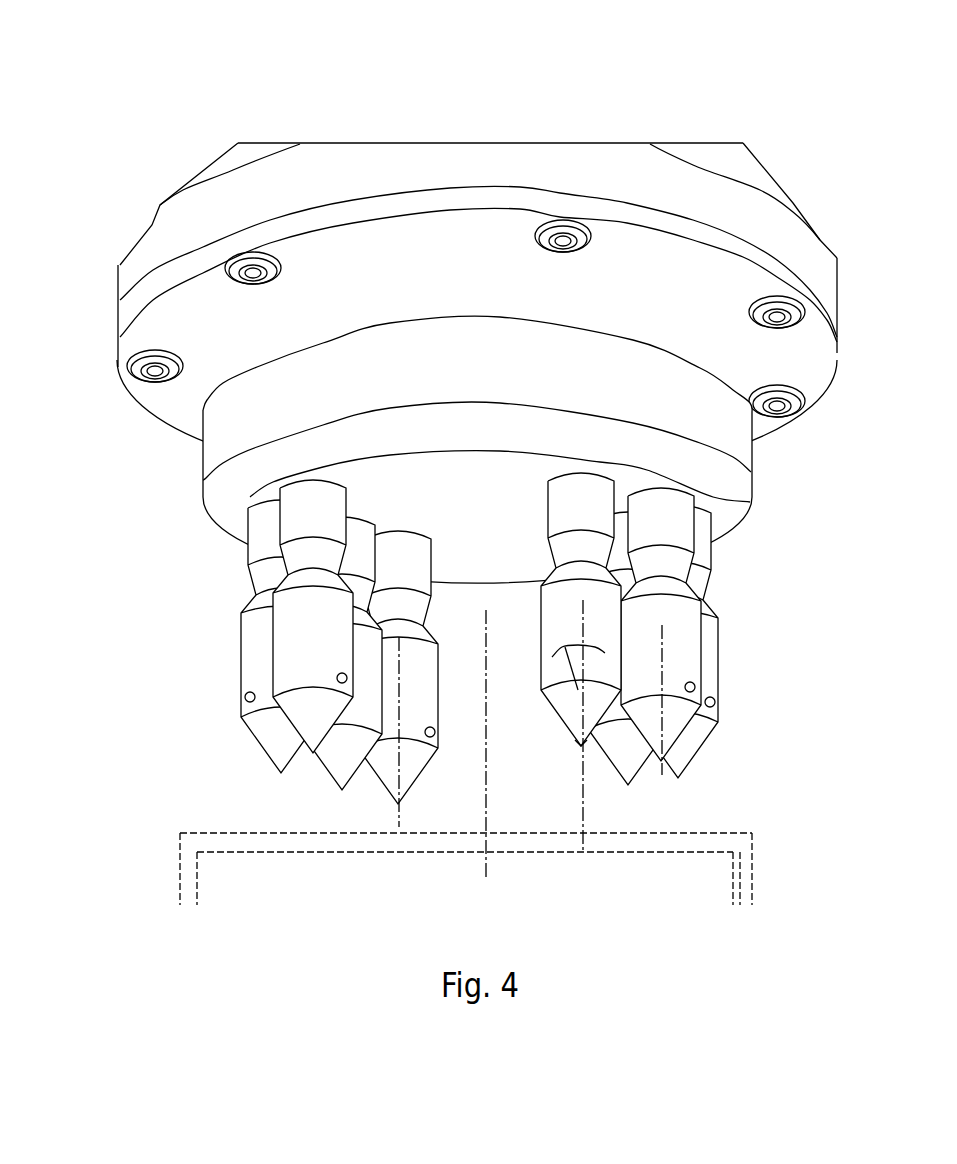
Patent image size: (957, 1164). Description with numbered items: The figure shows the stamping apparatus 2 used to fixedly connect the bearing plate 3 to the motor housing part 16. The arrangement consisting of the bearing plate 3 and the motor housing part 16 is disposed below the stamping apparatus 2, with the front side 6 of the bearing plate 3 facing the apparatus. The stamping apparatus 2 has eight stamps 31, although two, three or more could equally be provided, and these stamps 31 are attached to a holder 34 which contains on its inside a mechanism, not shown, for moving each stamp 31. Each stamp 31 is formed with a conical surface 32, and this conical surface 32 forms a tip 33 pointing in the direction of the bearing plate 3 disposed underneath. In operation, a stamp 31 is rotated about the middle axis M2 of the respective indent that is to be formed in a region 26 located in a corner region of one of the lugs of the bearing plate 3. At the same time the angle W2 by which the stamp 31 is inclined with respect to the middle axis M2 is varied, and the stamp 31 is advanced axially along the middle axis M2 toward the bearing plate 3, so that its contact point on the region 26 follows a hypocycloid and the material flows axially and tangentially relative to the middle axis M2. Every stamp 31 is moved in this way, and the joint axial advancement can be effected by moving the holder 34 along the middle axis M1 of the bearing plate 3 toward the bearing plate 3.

The stamping apparatus 2 is at (345, 78).
The holder 34 is at (522, 142).
The stamps 31 is at (683, 533).
The angle W2 is at (565, 642).
The conical surface 32 is at (552, 702).
The tip 33 is at (590, 766).
The middle axis M1 is at (484, 631).
The middle axis M2 is at (430, 706).
The regions 26 is at (583, 828).
The front side 6 is at (441, 835).
The bearing plate 3 is at (723, 832).
The motor housing part 16 is at (745, 872).